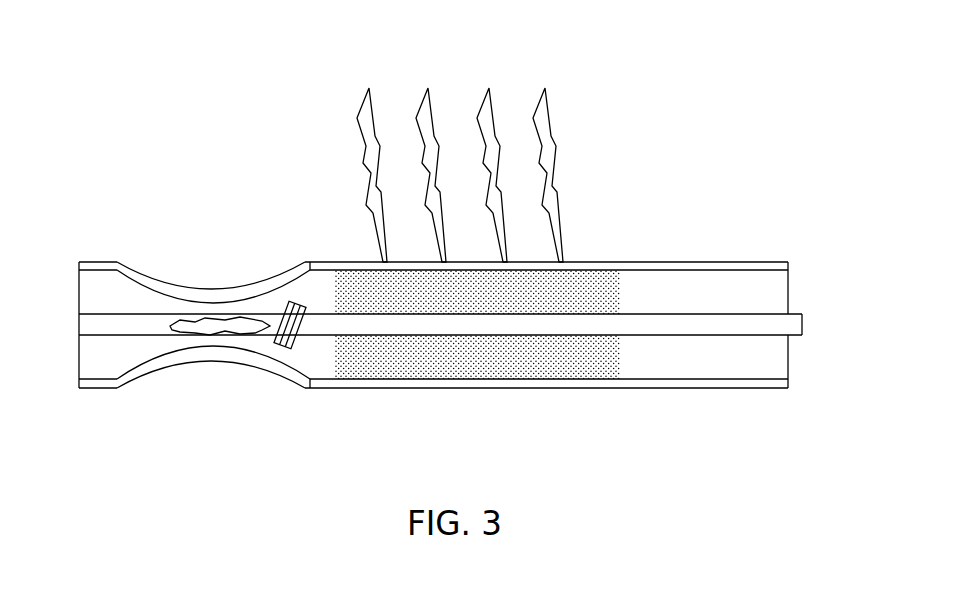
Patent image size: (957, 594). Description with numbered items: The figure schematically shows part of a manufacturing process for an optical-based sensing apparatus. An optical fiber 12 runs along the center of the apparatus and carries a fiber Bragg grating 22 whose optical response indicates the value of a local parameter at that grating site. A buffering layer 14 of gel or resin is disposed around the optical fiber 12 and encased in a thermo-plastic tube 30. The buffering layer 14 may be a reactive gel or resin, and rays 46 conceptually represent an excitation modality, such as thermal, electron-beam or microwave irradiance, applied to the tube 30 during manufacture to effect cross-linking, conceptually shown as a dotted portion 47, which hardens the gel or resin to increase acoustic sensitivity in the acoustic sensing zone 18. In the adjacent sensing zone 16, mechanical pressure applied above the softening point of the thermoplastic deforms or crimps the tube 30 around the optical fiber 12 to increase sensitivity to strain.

The optical fiber 12 is at (787, 323).
The buffering layer 14 is at (775, 287).
The sensing zone 16 is at (312, 408).
The acoustic sensing zone 18 is at (478, 327).
The fiber Bragg grating 22 is at (216, 324).
The tube 30 is at (705, 262).
The rays 46 is at (552, 70).
The dotted portion 47 is at (588, 290).